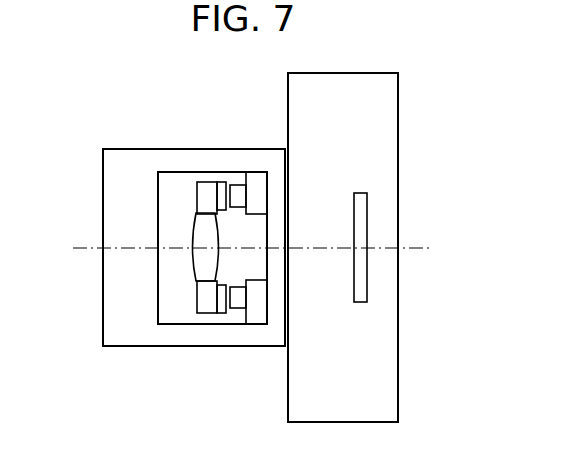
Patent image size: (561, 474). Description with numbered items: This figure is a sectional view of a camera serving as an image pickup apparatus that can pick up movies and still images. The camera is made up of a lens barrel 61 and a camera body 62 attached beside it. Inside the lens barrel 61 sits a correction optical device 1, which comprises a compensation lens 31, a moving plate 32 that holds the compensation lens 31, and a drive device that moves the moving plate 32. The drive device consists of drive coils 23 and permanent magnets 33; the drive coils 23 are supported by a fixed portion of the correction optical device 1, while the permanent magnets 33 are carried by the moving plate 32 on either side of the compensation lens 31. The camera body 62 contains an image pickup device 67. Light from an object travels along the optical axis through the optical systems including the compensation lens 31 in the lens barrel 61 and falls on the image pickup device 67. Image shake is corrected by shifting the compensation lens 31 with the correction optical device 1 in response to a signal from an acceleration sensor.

The correction optical device 1 is at (168, 176).
The drive coils 23 is at (237, 188).
The compensation lens 31 is at (198, 233).
The moving plate 32 is at (202, 297).
The permanent magnets 33 is at (220, 187).
The lens barrel 61 is at (212, 340).
The camera body 62 is at (391, 97).
The image pickup device 67 is at (361, 203).